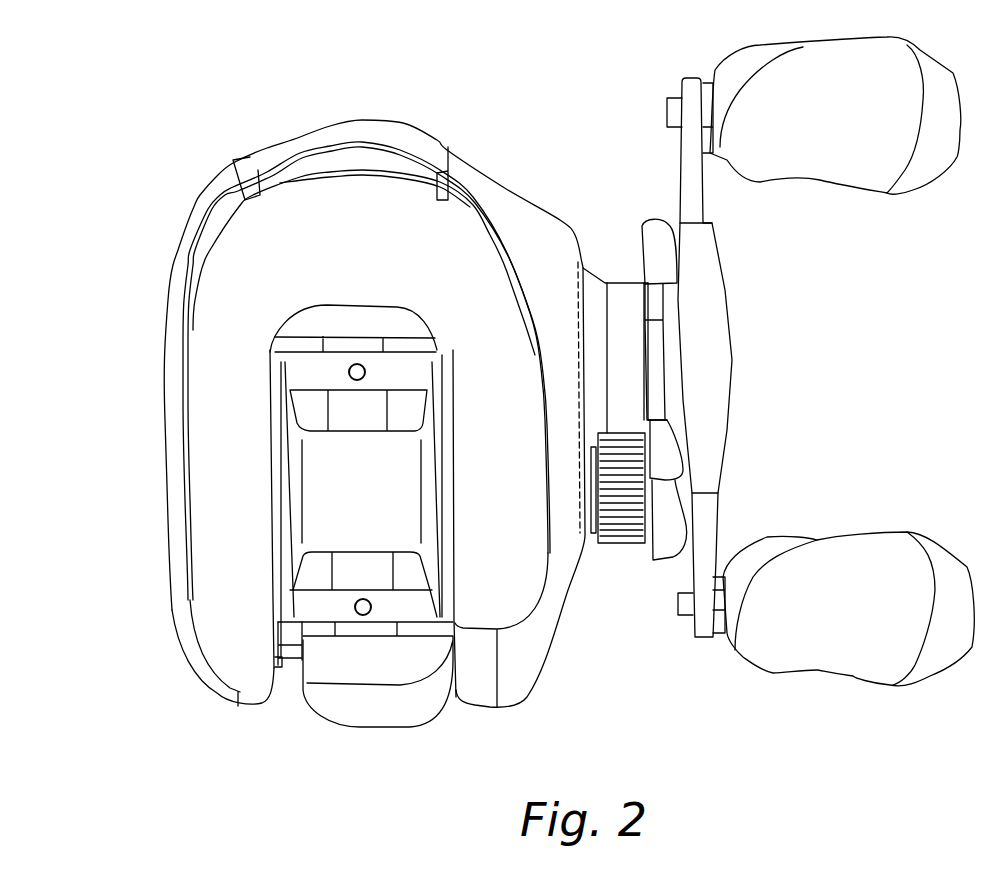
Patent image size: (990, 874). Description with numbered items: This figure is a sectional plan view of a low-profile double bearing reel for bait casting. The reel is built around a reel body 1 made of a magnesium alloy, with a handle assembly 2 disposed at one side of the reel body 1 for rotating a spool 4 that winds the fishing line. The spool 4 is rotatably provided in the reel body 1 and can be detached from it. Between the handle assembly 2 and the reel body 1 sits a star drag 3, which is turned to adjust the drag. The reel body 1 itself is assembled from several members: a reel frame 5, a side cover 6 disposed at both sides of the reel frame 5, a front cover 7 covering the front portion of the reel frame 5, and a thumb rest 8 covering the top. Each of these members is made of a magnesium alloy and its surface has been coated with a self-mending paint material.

The reel body 1 is at (401, 127).
The handle assembly 2 is at (720, 305).
The star drag 3 is at (647, 222).
The spool 4 is at (327, 533).
The reel frame 5 is at (250, 172).
The side cover 6 is at (183, 232).
The front cover 7 is at (262, 153).
The thumb rest 8 is at (410, 213).